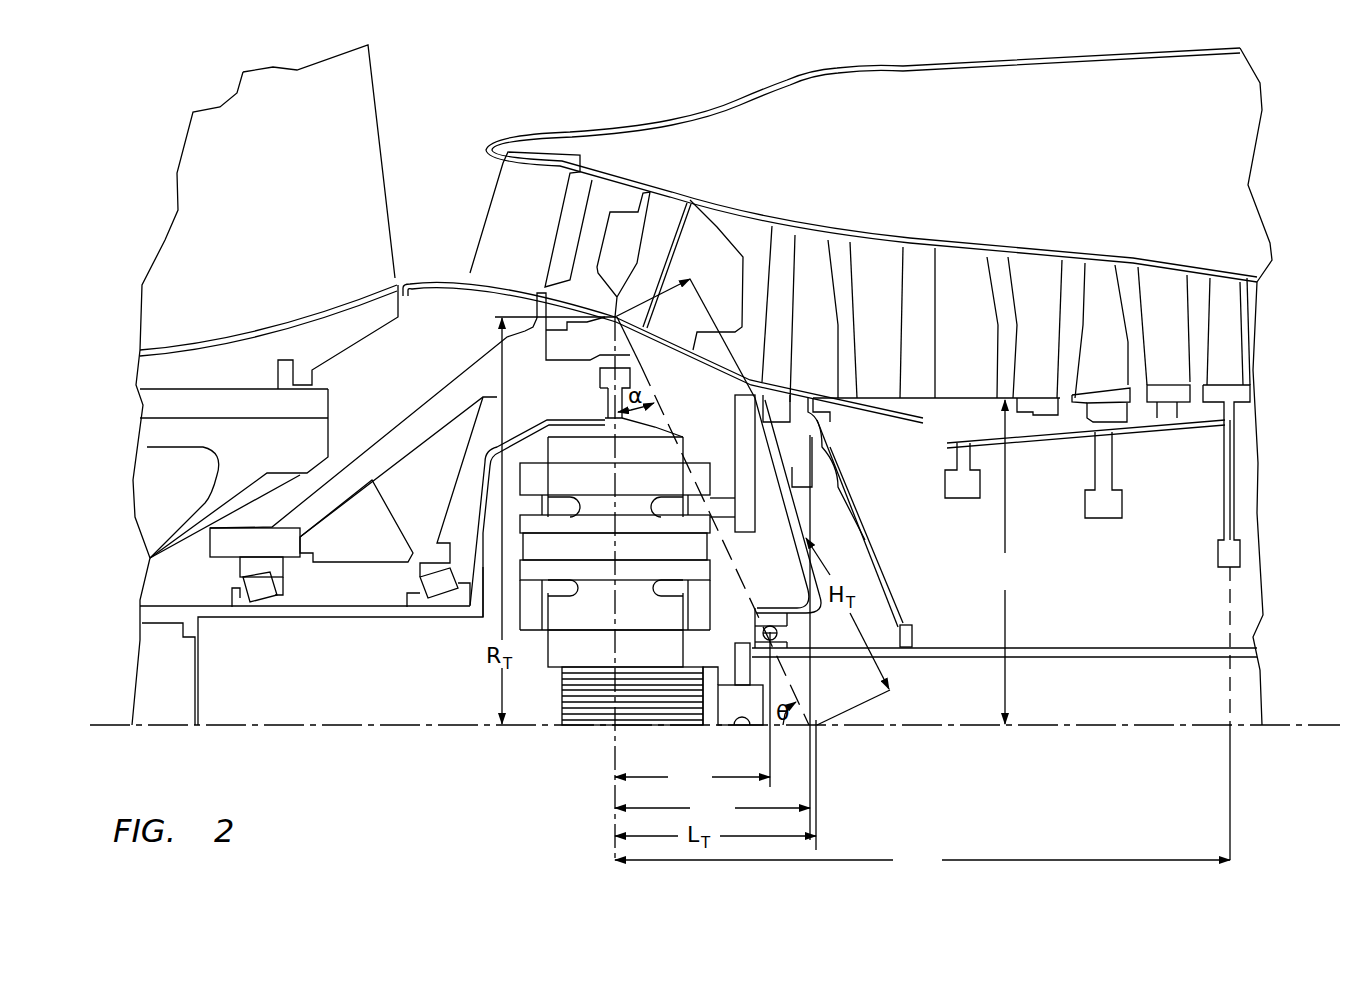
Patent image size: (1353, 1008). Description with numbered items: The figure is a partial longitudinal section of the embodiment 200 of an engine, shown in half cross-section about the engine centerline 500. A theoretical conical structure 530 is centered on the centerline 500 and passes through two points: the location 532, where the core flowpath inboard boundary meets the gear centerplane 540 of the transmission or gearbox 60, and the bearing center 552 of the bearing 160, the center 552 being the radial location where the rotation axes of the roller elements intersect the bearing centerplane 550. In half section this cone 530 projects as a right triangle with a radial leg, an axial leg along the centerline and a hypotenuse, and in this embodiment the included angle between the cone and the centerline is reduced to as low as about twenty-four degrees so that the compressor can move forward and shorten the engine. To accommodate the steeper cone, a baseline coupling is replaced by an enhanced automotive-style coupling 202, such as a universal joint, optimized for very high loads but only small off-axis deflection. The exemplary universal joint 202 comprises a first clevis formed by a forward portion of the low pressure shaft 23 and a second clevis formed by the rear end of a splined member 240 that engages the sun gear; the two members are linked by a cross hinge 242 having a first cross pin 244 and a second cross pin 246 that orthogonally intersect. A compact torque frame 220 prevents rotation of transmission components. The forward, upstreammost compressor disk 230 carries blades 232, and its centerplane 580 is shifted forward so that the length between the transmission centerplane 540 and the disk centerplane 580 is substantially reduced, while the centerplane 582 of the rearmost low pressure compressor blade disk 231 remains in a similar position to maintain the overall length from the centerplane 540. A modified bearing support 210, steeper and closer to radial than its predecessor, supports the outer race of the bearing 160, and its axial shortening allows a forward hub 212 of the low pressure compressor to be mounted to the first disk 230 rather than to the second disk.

The embodiment 200 is at (913, 386).
The blades 232 is at (811, 260).
The location 532 is at (616, 316).
The forward compressor disk 230 is at (824, 449).
The torque frame 220 is at (755, 508).
The bearing support 210 is at (816, 541).
The forward hub 212 is at (895, 572).
The bearing 160 is at (792, 635).
The theoretical conical structure 530 is at (713, 521).
The first cross pin 244 is at (737, 643).
The splined member 240 is at (574, 704).
The coupling 202 is at (718, 710).
The cross hinge 242 is at (753, 710).
The second cross pin 246 is at (743, 730).
The bearing centerplane 550 is at (770, 770).
The disk centerplane 580 is at (810, 797).
The gear centerplane 540 is at (615, 825).
The disk centerplane 582 is at (1230, 858).
The centerline 500 is at (1266, 732).
The low pressure shaft 23 is at (955, 702).
The fan drive gear system 60 is at (482, 634).
The rearmost LPC blade disk 231 is at (1250, 473).
The bearing center 552 is at (778, 640).